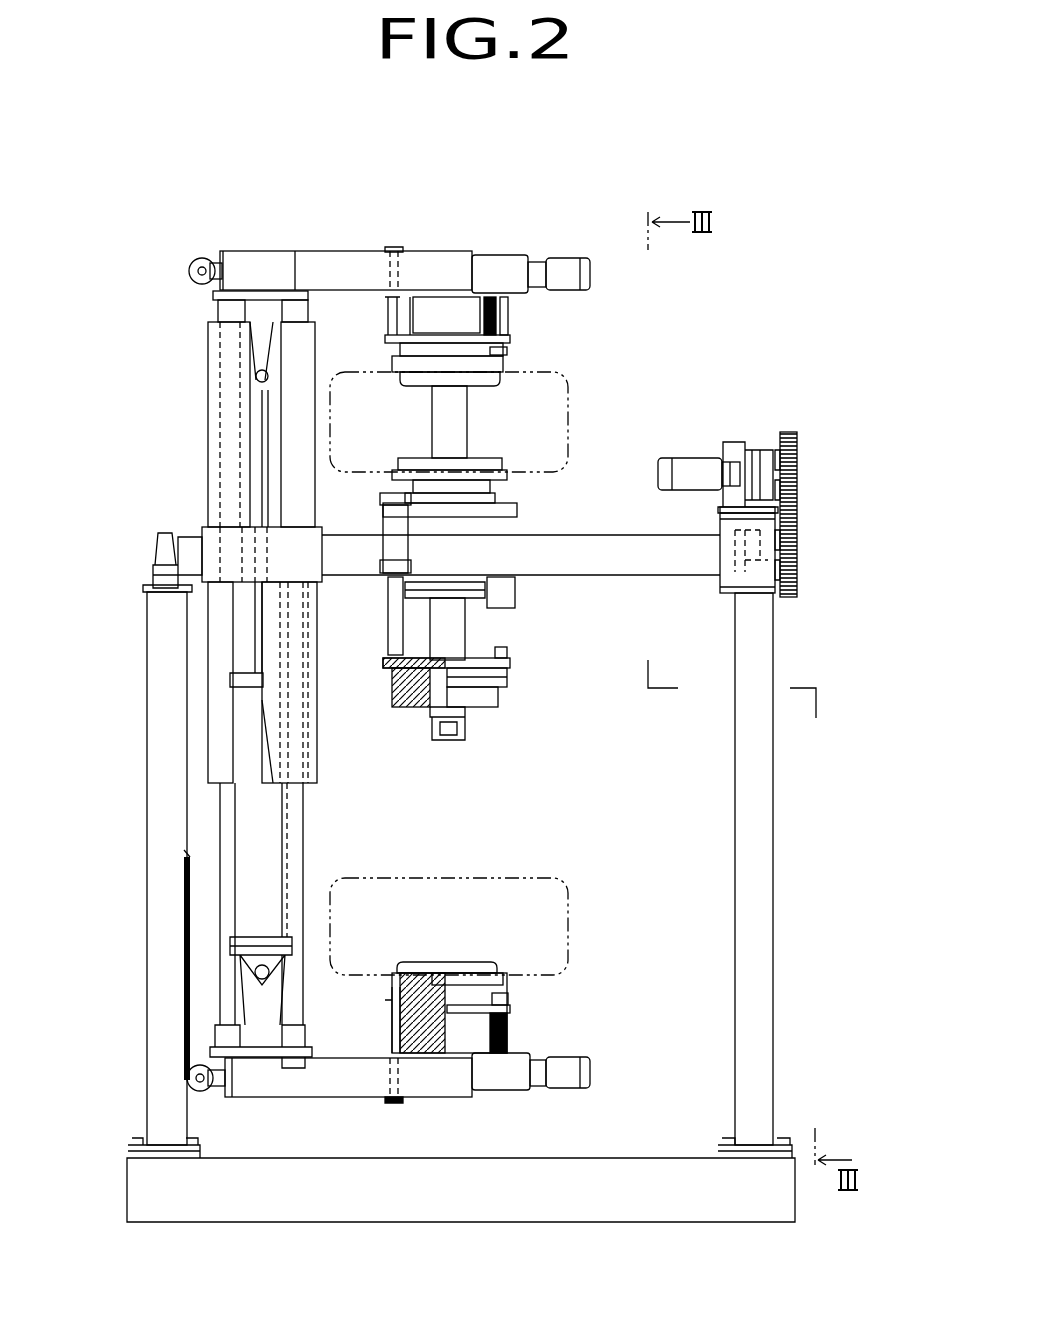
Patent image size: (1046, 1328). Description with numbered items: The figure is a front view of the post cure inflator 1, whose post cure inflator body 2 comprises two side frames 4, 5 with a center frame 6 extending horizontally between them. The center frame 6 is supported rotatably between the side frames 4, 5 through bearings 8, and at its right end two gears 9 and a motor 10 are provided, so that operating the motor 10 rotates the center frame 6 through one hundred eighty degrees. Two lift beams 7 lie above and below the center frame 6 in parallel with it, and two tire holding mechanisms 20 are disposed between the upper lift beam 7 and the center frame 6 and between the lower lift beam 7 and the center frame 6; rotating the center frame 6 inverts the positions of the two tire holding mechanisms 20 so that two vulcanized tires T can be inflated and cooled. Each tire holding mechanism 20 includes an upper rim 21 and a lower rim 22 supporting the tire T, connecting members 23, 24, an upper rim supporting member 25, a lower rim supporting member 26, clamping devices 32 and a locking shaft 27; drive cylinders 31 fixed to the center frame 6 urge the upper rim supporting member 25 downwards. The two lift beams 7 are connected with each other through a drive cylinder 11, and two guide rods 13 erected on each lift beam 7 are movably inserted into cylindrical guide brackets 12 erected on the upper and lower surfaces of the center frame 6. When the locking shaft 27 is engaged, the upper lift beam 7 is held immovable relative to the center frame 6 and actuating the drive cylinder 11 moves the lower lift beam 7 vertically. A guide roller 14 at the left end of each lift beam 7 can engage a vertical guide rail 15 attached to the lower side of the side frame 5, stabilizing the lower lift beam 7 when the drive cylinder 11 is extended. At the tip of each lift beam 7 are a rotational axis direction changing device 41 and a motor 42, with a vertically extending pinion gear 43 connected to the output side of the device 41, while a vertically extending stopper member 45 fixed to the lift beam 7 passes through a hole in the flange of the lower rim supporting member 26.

The processing machine 1 is at (139, 108).
The post cure inflator body 2 is at (215, 160).
The side frame 4 is at (775, 860).
The side frame 5 is at (150, 770).
The center frame 6 is at (610, 555).
The lift beam 7 is at (340, 255).
The bearing 8 is at (160, 548).
The gear 9 is at (798, 480).
The motor 10 is at (692, 462).
The drive cylinder 11 is at (270, 812).
The guide bracket 12 is at (218, 372).
The guide rod 13 is at (222, 458).
The guide roller 14 is at (205, 260).
The guide rail 15 is at (195, 965).
The tire holding mechanism 20 is at (657, 362).
The upper rim 21 is at (485, 465).
The lower rim 22 is at (480, 380).
The connecting member 23 is at (470, 485).
The connecting member 24 is at (500, 355).
The upper rim supporting member 25 is at (500, 503).
The lower rim supporting member 26 is at (505, 336).
The locking shaft 27 is at (440, 420).
The drive cylinder 31 is at (393, 525).
The clamping device 32 is at (505, 350).
The rotational axis direction changing device 41 is at (500, 260).
The motor 42 is at (562, 262).
The pinion gear 43 is at (508, 300).
The stopper member 45 is at (388, 315).
The tire T is at (572, 445).